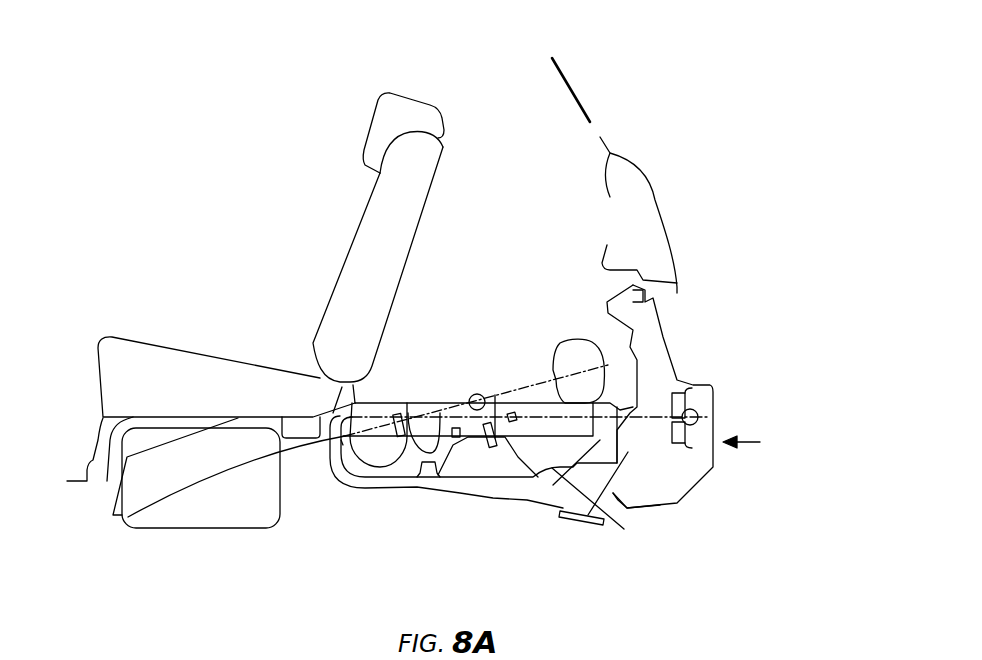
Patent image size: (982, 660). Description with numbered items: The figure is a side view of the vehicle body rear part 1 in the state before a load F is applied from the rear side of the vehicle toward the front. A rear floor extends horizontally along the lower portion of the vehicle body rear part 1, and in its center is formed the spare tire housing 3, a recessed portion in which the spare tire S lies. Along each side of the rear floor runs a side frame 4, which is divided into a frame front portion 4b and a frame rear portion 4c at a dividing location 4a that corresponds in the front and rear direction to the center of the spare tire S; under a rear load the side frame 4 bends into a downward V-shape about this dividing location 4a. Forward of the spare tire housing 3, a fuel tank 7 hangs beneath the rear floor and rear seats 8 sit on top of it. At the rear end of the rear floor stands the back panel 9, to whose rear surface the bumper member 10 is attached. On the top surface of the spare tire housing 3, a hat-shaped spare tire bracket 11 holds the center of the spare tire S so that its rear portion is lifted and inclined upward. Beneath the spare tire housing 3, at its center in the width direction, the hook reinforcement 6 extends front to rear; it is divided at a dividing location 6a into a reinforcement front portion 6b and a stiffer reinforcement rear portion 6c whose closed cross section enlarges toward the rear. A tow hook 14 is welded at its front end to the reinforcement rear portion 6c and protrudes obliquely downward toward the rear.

The vehicle body rear part 1 is at (583, 72).
The rear seats 8 is at (435, 148).
The side frame 4 is at (455, 398).
The dividing location 4a is at (477, 394).
The frame front portion 4b is at (407, 403).
The frame rear portion 4c is at (537, 403).
The spare tire S is at (573, 350).
The back panel 9 is at (630, 350).
The bumper member 10 is at (682, 398).
The load F is at (764, 442).
The fuel tank 7 is at (172, 516).
The hook reinforcement 6 is at (418, 495).
The dividing location 6a is at (507, 483).
The reinforcement front portion 6b is at (363, 493).
The reinforcement rear portion 6c is at (537, 493).
The spare tire bracket 11 is at (470, 475).
The tow hook 14 is at (573, 525).
The spare tire housing 3 is at (613, 493).